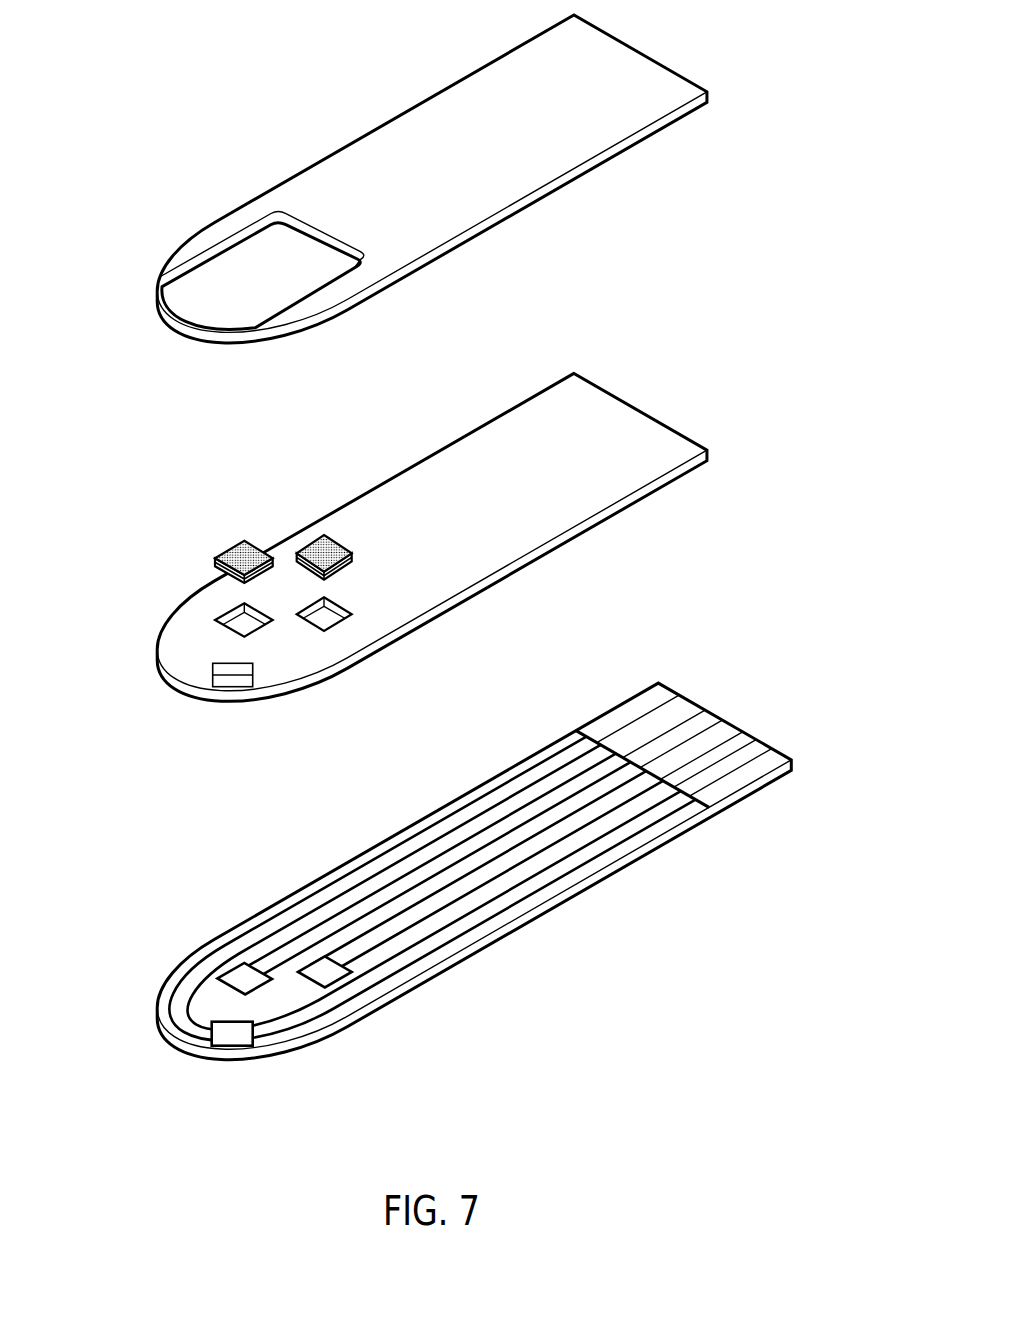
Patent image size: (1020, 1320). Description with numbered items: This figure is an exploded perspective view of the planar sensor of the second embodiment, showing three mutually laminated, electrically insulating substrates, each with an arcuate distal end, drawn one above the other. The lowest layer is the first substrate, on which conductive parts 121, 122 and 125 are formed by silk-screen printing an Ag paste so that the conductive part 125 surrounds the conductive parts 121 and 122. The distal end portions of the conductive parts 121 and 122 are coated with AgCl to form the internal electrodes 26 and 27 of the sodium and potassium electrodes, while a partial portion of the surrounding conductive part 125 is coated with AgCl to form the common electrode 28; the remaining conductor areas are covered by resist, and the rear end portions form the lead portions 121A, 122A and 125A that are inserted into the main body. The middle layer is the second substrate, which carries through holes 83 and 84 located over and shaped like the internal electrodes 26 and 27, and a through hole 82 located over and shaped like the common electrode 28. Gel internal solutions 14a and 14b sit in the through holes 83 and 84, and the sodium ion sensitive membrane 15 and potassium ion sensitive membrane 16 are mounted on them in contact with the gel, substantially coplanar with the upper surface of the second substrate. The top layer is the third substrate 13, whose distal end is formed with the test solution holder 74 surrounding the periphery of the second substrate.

The third substrate 13 is at (580, 177).
The test solution holder 74 is at (157, 290).
The sodium ion sensitive membrane 15 is at (232, 546).
The gel internal solution 14a is at (218, 567).
The potassium ion sensitive membrane 16 is at (334, 541).
The gel internal solution 14b is at (356, 556).
The through hole 83 is at (233, 616).
The through hole 84 is at (327, 617).
The through hole 82 is at (233, 680).
The conductive part 125 is at (318, 879).
The conductive part 121 is at (463, 842).
The conductive part 122 is at (484, 888).
The internal electrode 26 is at (218, 977).
The internal electrode 27 is at (342, 982).
The common electrode 28 is at (230, 1047).
The lead portion 125A is at (674, 686).
The lead portion 121A is at (705, 708).
The lead portion 122A is at (742, 725).